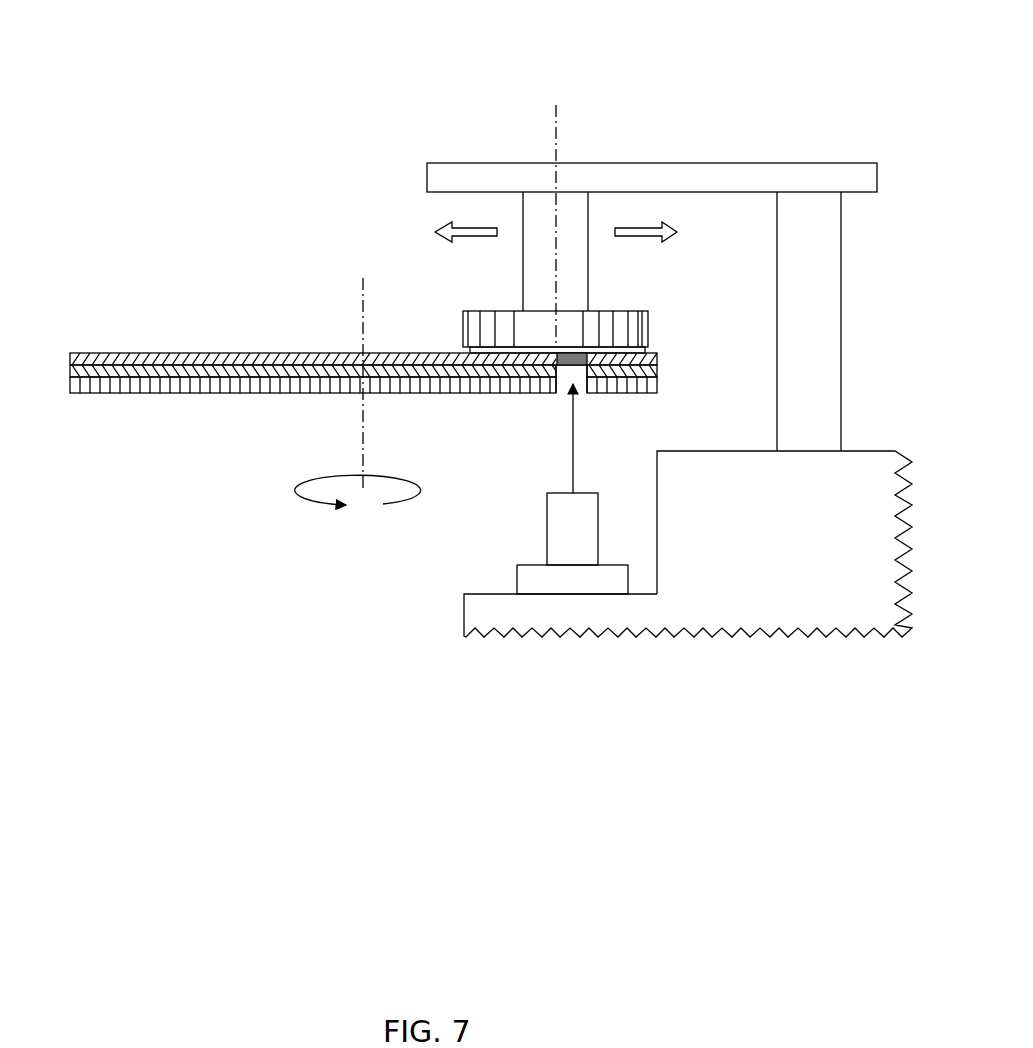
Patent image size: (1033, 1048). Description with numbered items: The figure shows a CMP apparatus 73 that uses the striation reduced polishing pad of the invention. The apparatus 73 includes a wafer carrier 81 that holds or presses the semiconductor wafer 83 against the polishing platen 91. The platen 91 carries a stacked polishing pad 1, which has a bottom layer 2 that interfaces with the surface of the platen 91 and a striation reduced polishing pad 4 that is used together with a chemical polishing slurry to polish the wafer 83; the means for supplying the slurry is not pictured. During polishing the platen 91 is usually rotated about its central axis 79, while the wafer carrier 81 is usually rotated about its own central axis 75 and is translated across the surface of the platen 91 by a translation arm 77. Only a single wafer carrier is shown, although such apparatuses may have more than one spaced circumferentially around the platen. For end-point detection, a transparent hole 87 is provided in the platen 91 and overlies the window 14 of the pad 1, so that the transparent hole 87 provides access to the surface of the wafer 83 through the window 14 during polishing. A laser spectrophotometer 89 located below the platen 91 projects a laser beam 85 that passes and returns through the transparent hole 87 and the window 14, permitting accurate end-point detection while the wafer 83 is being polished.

The CMP apparatus 73 is at (166, 108).
The central axis 75 is at (565, 130).
The translation arm 77 is at (832, 178).
The central axis 79 is at (372, 320).
The wafer carrier 81 is at (602, 317).
The semiconductor wafer 83 is at (645, 350).
The stacked polishing pad 1 is at (236, 341).
The polishing pad 4 is at (73, 358).
The bottom layer 2 is at (72, 375).
The polishing platen 91 is at (125, 385).
The window 14 is at (578, 362).
The transparent hole 87 is at (561, 400).
The laser beam 85 is at (584, 456).
The laser spectrophotometer 89 is at (560, 523).